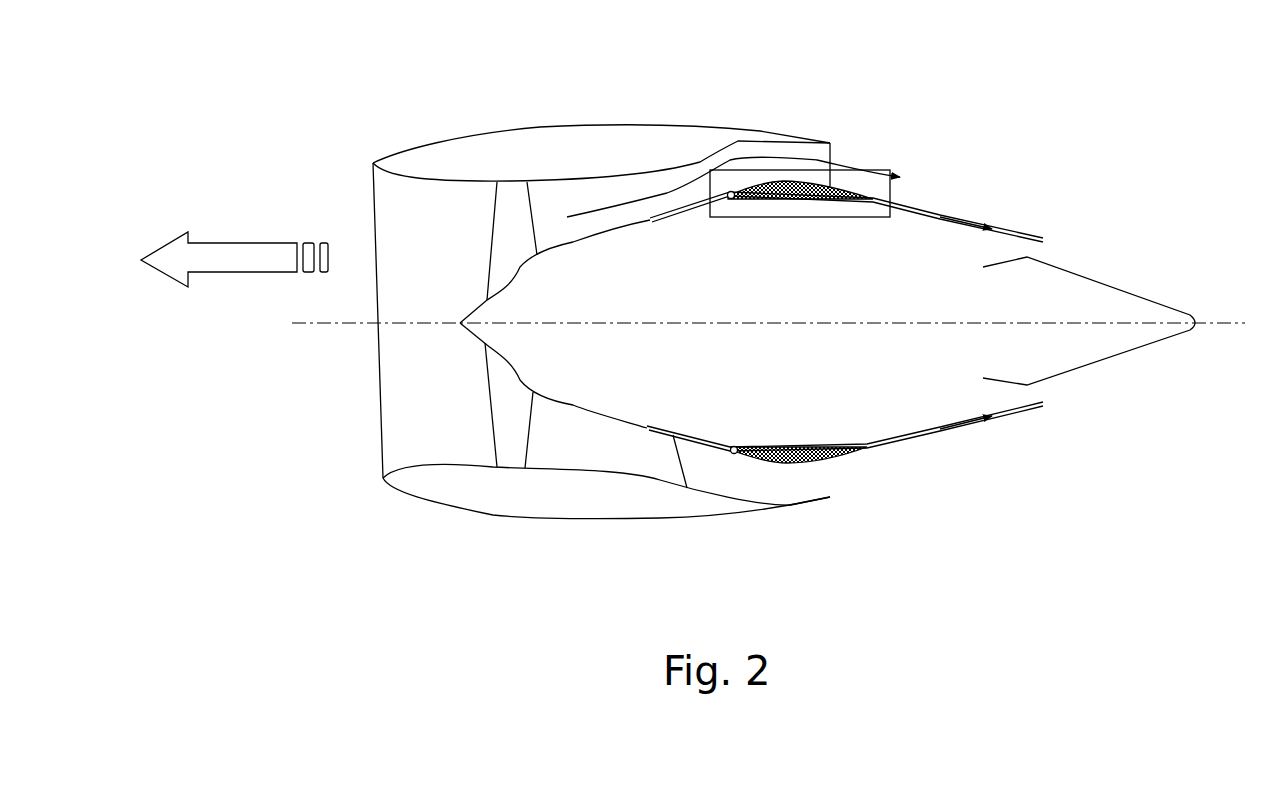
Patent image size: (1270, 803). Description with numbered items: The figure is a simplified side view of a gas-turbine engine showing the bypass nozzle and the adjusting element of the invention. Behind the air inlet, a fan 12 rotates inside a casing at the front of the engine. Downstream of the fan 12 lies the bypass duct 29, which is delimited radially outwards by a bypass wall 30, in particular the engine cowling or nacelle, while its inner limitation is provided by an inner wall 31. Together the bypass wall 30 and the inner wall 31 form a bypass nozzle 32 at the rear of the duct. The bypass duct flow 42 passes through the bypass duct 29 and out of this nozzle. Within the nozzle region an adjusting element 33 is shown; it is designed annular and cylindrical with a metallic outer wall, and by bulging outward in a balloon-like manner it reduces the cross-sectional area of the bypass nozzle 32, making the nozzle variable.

The fan 12 is at (512, 190).
The bypass duct 29 is at (600, 187).
The bypass duct flow 42 is at (678, 183).
The bypass wall 30 is at (740, 140).
The inner wall 31 is at (683, 207).
The bypass nozzle 32 is at (817, 477).
The adjusting element 33 is at (817, 182).